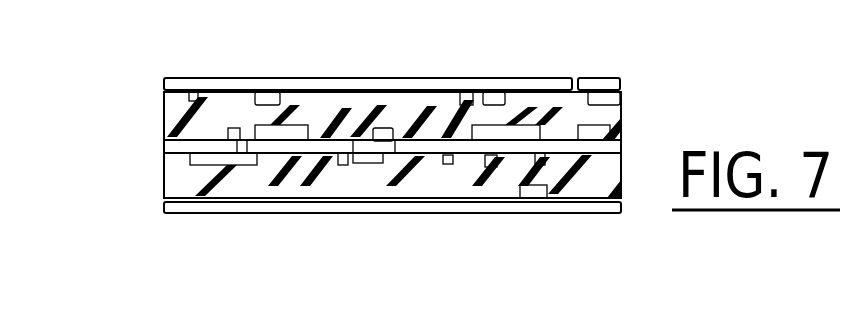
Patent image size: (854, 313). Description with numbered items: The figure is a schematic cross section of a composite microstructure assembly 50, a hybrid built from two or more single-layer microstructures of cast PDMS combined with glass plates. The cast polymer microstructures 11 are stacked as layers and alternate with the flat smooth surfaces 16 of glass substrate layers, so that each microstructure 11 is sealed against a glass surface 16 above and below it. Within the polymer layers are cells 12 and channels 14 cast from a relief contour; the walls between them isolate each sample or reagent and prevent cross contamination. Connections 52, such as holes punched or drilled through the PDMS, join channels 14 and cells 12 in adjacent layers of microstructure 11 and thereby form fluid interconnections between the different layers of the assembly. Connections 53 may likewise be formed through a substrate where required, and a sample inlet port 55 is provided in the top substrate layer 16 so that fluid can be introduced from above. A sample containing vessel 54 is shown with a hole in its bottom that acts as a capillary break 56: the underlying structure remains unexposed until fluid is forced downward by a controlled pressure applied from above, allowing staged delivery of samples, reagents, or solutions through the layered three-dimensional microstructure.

The composite microstructure assembly 50 is at (98, 141).
The surface 16 is at (163, 80).
The microstructure 11 is at (165, 107).
The connection 52 is at (430, 128).
The sample containing vessel 54 is at (248, 140).
The capillary break 56 is at (247, 154).
The cell 12 is at (358, 153).
The connection 53 is at (352, 155).
The channel 14 is at (453, 158).
The sample inlet port 55 is at (578, 78).